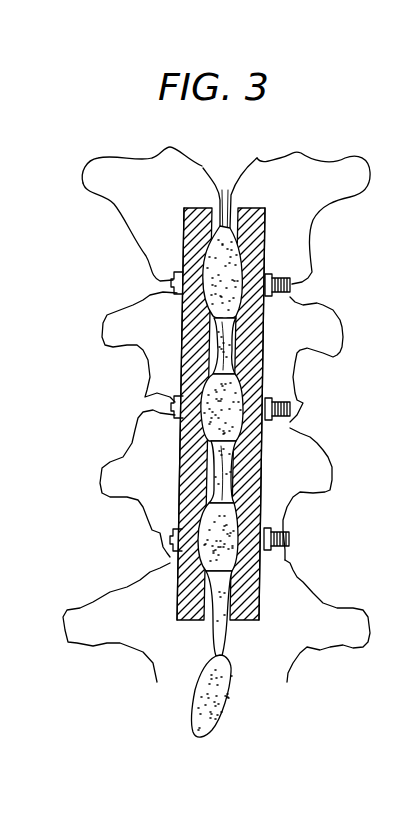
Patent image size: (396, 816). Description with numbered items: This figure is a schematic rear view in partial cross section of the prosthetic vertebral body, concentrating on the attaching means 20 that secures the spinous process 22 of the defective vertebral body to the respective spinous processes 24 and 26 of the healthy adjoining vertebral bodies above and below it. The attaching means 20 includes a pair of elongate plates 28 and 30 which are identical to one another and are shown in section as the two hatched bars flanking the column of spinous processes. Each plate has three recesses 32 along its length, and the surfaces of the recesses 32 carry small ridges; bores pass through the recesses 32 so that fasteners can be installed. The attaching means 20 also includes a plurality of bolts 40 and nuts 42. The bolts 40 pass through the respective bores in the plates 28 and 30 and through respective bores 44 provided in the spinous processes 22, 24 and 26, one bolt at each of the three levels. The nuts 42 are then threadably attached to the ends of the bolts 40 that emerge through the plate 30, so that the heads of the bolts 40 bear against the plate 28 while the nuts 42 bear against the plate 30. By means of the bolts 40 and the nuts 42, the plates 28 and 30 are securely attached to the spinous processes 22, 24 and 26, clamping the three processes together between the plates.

The attaching means 20 is at (208, 414).
The spinous process 22 is at (245, 388).
The spinous process 24 is at (253, 262).
The spinous process 26 is at (248, 524).
The elongate plate 28 is at (178, 470).
The elongate plate 30 is at (266, 357).
The recess 32 is at (220, 207).
The bolt 40 is at (176, 283).
The nut 42 is at (284, 297).
The bore 44 is at (174, 326).